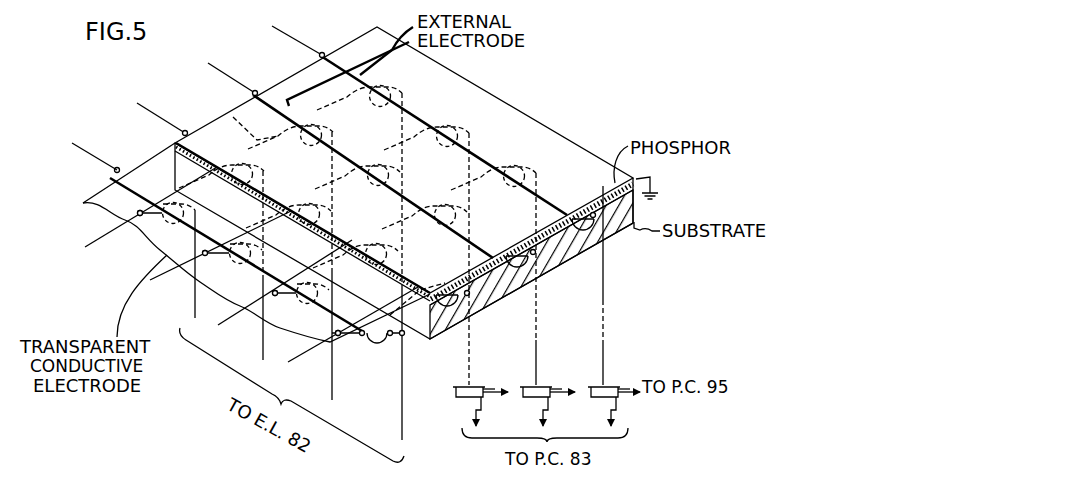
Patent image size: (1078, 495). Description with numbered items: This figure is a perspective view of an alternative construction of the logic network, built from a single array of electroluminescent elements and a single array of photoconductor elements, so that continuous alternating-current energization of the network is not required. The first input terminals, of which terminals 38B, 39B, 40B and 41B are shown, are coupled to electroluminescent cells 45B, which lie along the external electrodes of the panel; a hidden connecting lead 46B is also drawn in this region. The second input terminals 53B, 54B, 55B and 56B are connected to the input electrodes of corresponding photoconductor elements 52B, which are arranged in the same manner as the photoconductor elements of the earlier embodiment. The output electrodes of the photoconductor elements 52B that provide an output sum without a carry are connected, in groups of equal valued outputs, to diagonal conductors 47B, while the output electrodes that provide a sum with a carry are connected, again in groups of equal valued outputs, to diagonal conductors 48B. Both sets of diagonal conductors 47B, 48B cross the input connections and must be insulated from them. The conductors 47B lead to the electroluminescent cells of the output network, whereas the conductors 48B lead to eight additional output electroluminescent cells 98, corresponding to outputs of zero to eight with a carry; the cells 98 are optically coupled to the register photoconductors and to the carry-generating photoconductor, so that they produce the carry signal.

The input terminal 38B is at (113, 170).
The input terminal 39B is at (181, 133).
The input terminal 40B is at (222, 75).
The input terminal 41B is at (284, 35).
The electroluminescent cell 45B is at (123, 168).
The hidden connecting lead 46B is at (233, 117).
The diagonal conductor 47B is at (196, 288).
The diagonal conductor 48B is at (469, 328).
The photoconductor element 52B is at (165, 226).
The second input terminal 53B is at (90, 246).
The second input terminal 54B is at (160, 276).
The second input terminal 55B is at (229, 317).
The second input terminal 56B is at (300, 355).
The output electroluminescent cell 98 is at (463, 386).